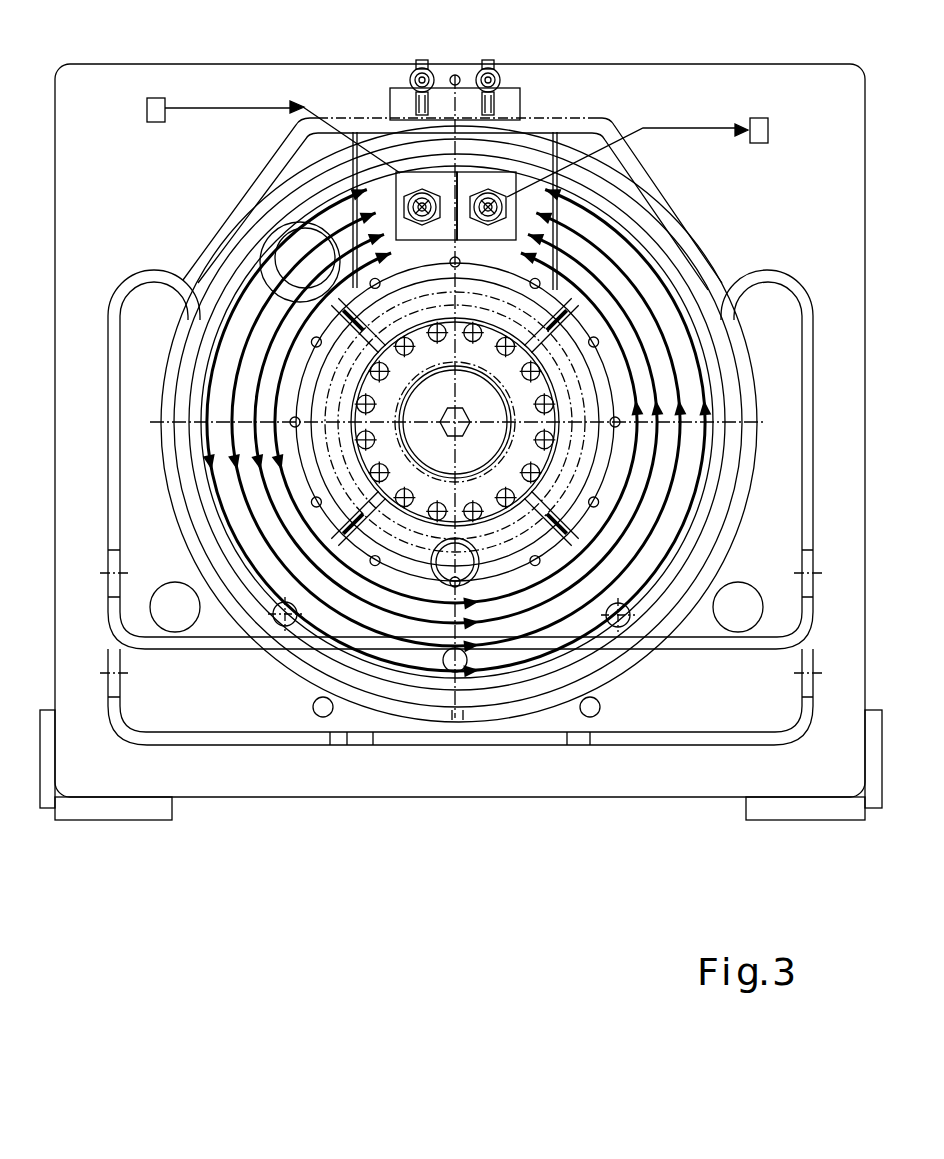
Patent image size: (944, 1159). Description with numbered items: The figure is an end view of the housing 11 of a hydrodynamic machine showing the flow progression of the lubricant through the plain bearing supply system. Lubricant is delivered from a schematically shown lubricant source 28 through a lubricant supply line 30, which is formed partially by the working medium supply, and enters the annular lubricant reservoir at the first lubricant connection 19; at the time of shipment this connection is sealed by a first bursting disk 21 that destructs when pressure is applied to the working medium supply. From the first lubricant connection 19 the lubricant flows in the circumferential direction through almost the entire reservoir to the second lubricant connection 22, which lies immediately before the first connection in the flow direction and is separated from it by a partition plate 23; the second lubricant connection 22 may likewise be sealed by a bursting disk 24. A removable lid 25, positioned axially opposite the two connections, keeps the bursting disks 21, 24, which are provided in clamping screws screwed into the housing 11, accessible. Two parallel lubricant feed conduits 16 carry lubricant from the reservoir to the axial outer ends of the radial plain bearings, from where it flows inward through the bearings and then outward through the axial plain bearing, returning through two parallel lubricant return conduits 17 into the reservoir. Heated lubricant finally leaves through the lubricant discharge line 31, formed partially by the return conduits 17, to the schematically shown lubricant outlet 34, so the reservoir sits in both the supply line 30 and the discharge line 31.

The housing 11 is at (290, 781).
The lubricant feed conduits 16 is at (368, 505).
The lubricant return conduits 17 is at (357, 314).
The first lubricant connection 19 is at (418, 182).
The first bursting disk 21 is at (429, 222).
The second lubricant connection 22 is at (500, 170).
The partition plate 23 is at (458, 165).
The bursting disk 24 is at (487, 224).
The removable lid 25 is at (529, 165).
The lubricant source 28 is at (165, 100).
The lubricant supply line 30 is at (186, 112).
The lubricant discharge line 31 is at (700, 128).
The lubricant outlet 34 is at (768, 125).